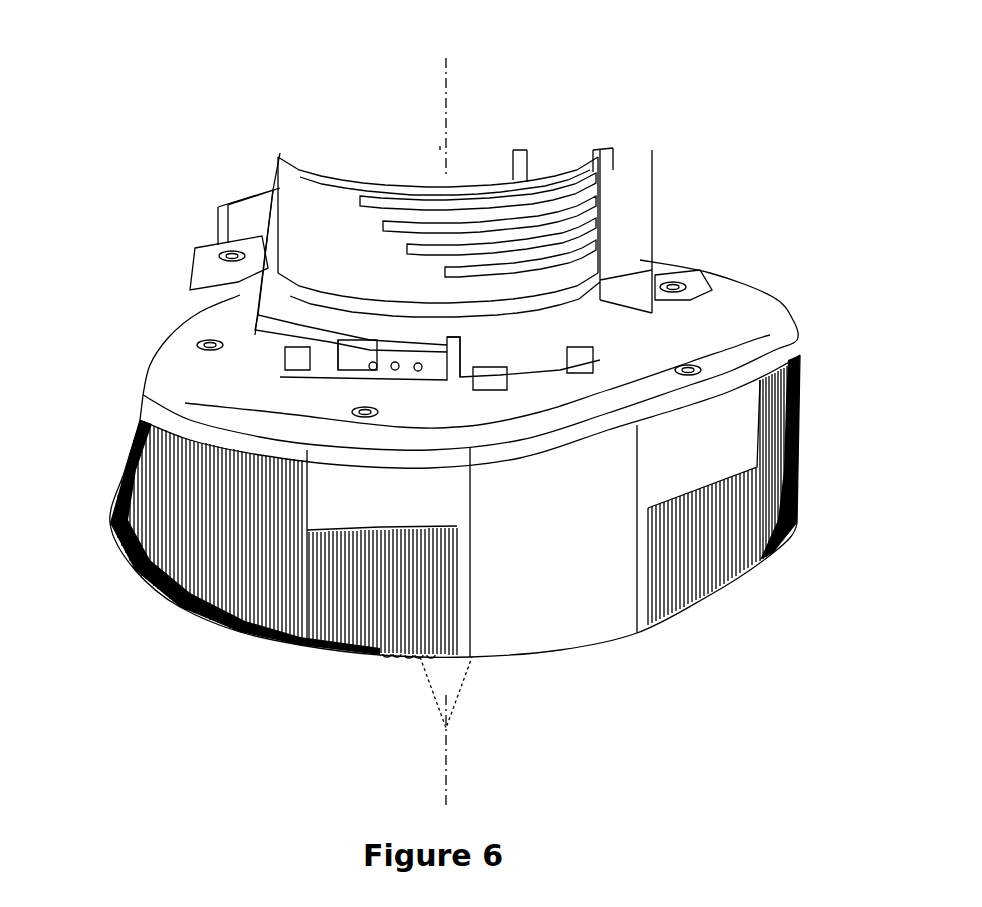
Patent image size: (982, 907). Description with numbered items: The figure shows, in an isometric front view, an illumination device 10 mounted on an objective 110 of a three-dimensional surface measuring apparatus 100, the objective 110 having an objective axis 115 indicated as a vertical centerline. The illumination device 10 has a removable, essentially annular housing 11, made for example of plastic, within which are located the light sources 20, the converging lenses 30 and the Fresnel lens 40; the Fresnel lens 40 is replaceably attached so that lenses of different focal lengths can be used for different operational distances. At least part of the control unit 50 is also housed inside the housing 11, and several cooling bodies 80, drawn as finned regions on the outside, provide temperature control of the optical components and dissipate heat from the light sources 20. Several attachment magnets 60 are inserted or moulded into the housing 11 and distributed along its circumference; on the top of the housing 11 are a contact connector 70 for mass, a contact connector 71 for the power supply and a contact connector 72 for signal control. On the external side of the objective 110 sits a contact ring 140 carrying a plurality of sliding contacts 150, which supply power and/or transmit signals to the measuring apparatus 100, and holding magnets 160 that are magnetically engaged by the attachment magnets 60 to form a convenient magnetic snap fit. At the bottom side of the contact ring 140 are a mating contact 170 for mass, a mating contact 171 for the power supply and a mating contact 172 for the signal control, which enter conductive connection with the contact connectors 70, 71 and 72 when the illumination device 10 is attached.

The 3D surface measuring apparatus 100 is at (135, 104).
The illumination device 10 is at (178, 620).
The housing 11 is at (372, 502).
The light sources 20 is at (364, 664).
The converging lenses 30 is at (388, 664).
The Fresnel lens 40 is at (411, 664).
The control unit 50 is at (520, 550).
The cooling bodies 80 is at (703, 552).
The attachment magnets 60 is at (291, 307).
The contact connector for mass 70 is at (371, 370).
The contact connector for the power supply 71 is at (393, 370).
The contact connector for a signal control 72 is at (419, 371).
The objective 110 is at (562, 165).
The objective axis 115 is at (447, 90).
The contact ring 140 is at (293, 268).
The sliding contacts 150 is at (517, 267).
The holding magnets 160 is at (303, 232).
The mating contact for mass 170 is at (371, 341).
The mating contact for the power supply 171 is at (394, 340).
The mating contact for the signal control 172 is at (417, 341).